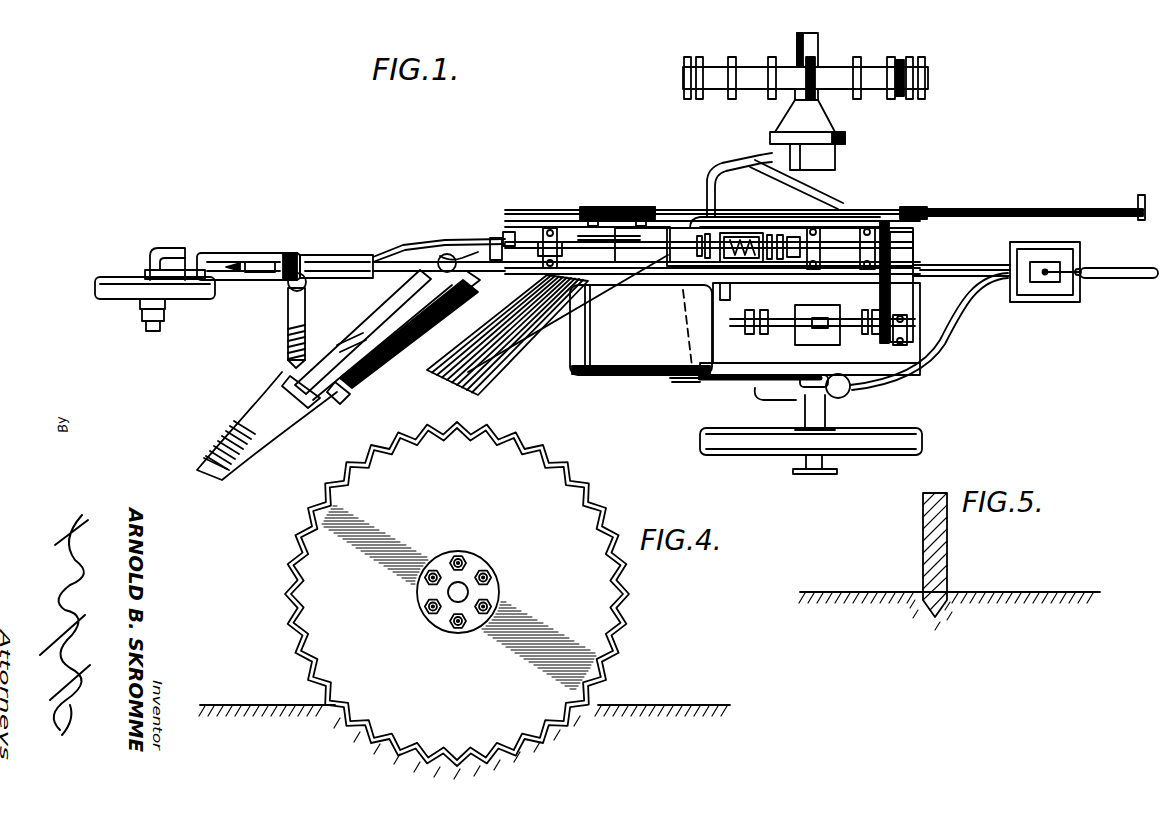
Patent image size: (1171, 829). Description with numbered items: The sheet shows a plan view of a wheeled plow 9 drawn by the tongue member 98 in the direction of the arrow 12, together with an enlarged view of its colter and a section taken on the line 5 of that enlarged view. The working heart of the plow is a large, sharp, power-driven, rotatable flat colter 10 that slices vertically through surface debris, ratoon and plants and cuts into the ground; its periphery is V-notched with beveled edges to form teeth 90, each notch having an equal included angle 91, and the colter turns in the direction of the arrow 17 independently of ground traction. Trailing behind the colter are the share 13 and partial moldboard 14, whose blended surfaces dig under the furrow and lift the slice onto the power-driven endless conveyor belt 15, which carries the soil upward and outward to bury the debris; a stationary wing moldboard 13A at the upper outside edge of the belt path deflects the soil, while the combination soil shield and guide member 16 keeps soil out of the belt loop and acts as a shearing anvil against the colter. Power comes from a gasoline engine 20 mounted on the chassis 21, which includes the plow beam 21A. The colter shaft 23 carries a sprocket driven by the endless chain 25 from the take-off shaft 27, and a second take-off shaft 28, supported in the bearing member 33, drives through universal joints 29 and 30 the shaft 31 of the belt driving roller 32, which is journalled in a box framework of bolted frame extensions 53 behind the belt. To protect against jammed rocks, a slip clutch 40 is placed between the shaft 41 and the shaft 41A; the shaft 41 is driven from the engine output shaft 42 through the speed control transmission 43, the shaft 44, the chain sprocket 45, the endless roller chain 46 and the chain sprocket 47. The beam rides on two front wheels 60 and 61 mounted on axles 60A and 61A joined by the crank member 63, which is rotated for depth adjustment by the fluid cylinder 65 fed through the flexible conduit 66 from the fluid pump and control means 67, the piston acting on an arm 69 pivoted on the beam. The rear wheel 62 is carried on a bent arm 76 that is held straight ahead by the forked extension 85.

In FIG. 4, the section line 5— 5 is at (350, 680).
In FIG. 1, the plow 9 is at (941, 191).
In FIG. 4, the colter 10 is at (457, 594).
In FIG. 5, the colter 10 is at (947, 536).
In FIG. 1, the arrow 12 is at (492, 165).
In FIG. 1, the share 13 is at (665, 264).
In FIG. 1, the stationary wing moldboard 13A is at (250, 415).
In FIG. 1, the partial moldboard 14 is at (410, 355).
In FIG. 1, the endless conveyor moldboard belt 15 is at (393, 374).
In FIG. 1, the combination soil shield and guide member 16 is at (418, 317).
In FIG. 4, the arrow 17 is at (556, 632).
In FIG. 1, the gasoline engine 20 is at (641, 330).
In FIG. 1, the chassis 21 is at (966, 258).
In FIG. 1, the plow beam 21A is at (680, 380).
In FIG. 4, the colter shaft 23 is at (460, 590).
In FIG. 1, the endless chain 25 is at (628, 207).
In FIG. 1, the power-driven take-off shaft 27 is at (664, 236).
In FIG. 1, the power take-off shaft 28 is at (585, 238).
In FIG. 1, the universal joint 29 is at (504, 232).
In FIG. 1, the universal joint 30 is at (448, 255).
In FIG. 1, the roller shaft 31 is at (399, 288).
In FIG. 1, the belt driving roller 32 is at (458, 300).
In FIG. 1, the bearing member 33 is at (548, 228).
In FIG. 1, the slip clutch 40 is at (804, 226).
In FIG. 1, the shaft 41 is at (838, 240).
In FIG. 1, the shaft 41A is at (684, 236).
In FIG. 1, the output shaft 42 is at (746, 322).
In FIG. 1, the speed control transmission 43 is at (836, 343).
In FIG. 1, the shaft 44 is at (838, 322).
In FIG. 1, the chain sprocket 45 is at (906, 306).
In FIG. 1, the endless roller chain 46 is at (906, 290).
In FIG. 1, the chain sprocket 47 is at (890, 222).
In FIG. 1, the bolted frame extensions 53 is at (386, 257).
In FIG. 1, the front wheel 60 is at (898, 72).
In FIG. 1, the axle 60A is at (820, 48).
In FIG. 1, the front wheel 61 is at (925, 441).
In FIG. 1, the axle 61A is at (803, 462).
In FIG. 1, the rear wheel 62 is at (115, 283).
In FIG. 1, the crank member 63 is at (736, 167).
In FIG. 1, the fluid cylinder 65 is at (836, 392).
In FIG. 1, the flexible conduit 66 is at (940, 364).
In FIG. 1, the fluid pump and control means 67 is at (1062, 260).
In FIG. 1, the arm 69 is at (800, 402).
In FIG. 1, the arm 76 is at (170, 250).
In FIG. 1, the forked extension 85 is at (218, 258).
In FIG. 4, the teeth 90 is at (602, 676).
In FIG. 5, the teeth 90 is at (935, 614).
In FIG. 4, the included angle 91 is at (606, 510).
In FIG. 1, the tongue member 98 is at (1133, 278).